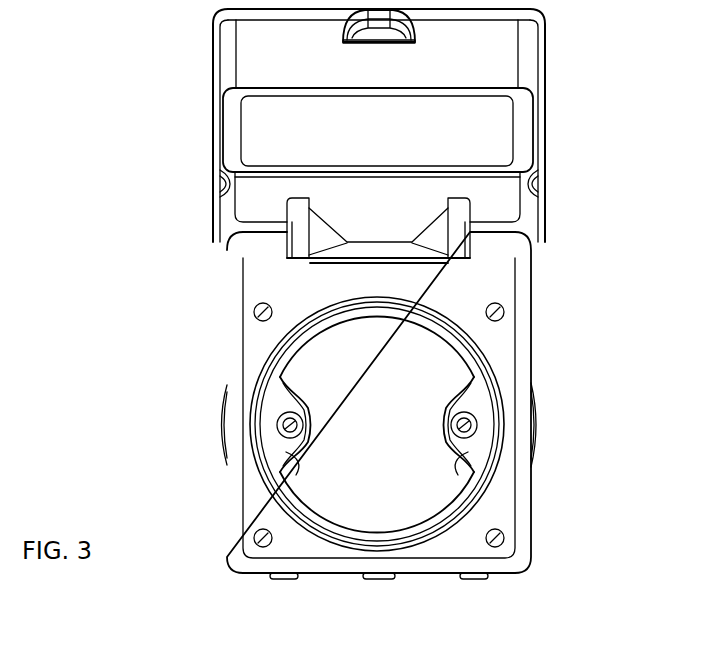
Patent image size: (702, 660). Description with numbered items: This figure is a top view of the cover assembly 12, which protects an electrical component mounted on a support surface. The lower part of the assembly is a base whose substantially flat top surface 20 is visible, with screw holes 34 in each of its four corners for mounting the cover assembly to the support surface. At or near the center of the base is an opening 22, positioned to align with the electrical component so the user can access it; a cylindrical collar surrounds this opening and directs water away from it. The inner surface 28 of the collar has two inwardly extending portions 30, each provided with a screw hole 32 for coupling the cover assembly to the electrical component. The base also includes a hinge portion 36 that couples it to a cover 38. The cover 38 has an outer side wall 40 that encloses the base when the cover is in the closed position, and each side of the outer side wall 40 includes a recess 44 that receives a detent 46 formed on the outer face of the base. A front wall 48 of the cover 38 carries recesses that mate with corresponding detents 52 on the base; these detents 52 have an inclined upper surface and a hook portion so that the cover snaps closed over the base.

The cover assembly 12 is at (383, 136).
The top surface 20 is at (480, 280).
The opening 22 is at (366, 488).
The inner surface 28 is at (420, 327).
The inwardly extending portions 30 is at (285, 470).
The screw hole 32 is at (277, 425).
The screw holes 34 is at (253, 313).
The hinge portion 36 is at (328, 223).
The cover 38 is at (548, 68).
The outer side wall 40 is at (207, 212).
The recess 44 is at (222, 190).
The detent 46 is at (220, 433).
The front wall 48 is at (255, 62).
The detent 52 is at (283, 580).